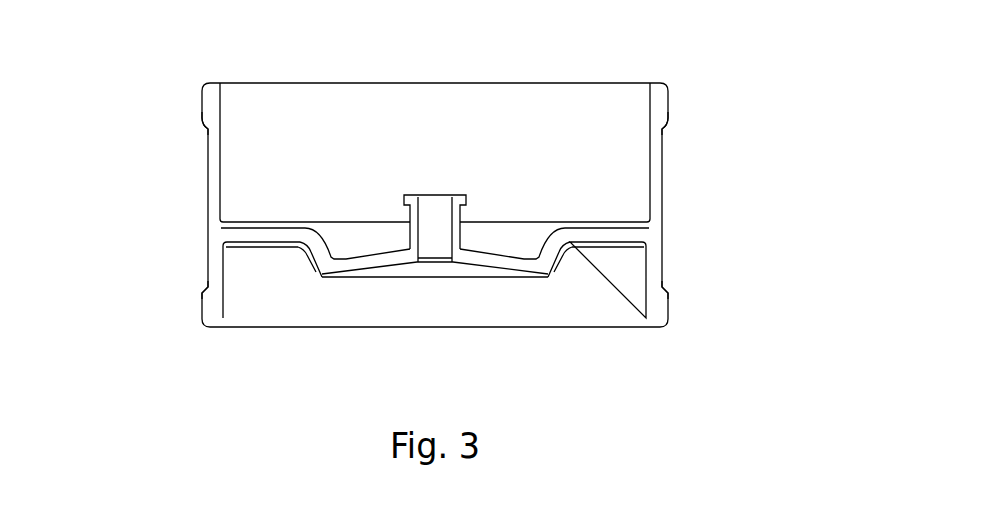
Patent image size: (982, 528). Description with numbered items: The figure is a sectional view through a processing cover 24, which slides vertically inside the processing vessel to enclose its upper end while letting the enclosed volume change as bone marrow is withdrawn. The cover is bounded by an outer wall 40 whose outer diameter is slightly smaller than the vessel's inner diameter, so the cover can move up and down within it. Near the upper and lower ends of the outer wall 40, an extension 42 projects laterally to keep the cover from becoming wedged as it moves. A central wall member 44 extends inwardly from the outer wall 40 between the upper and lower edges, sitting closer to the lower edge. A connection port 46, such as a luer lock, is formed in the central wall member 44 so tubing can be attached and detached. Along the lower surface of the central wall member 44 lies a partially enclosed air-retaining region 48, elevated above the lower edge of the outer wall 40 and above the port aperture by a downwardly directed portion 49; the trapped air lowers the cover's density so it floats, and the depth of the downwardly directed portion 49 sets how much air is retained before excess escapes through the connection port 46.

The processing cover 24 is at (733, 142).
The outer wall 40 is at (217, 200).
The extension 42 is at (208, 107).
The central wall member 44 is at (592, 233).
The connection port 46 is at (404, 200).
The air-retaining region 48 is at (610, 258).
The downwardly directed portion 49 is at (322, 262).